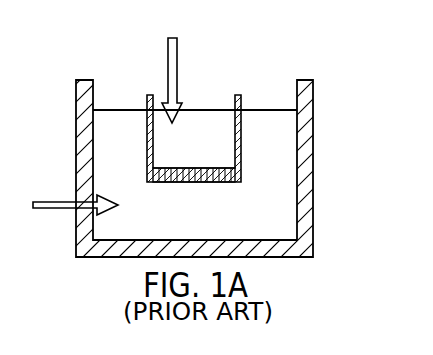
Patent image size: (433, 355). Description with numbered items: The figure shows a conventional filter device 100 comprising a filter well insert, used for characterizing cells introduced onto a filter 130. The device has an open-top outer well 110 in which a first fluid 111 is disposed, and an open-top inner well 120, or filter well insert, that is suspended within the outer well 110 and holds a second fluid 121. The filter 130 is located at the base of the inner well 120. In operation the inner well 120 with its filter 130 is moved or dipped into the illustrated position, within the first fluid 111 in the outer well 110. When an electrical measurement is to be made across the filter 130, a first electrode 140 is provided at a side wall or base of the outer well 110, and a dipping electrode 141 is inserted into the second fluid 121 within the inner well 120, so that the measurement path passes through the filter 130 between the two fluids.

The prior art apparatus 100 is at (67, 33).
The outer well 110 is at (312, 89).
The first fluid 111 is at (280, 168).
The inner well 120 is at (240, 96).
The second fluid 121 is at (204, 120).
The filter 130 is at (220, 180).
The first electrode 140 is at (57, 210).
The dipping electrode 141 is at (168, 58).